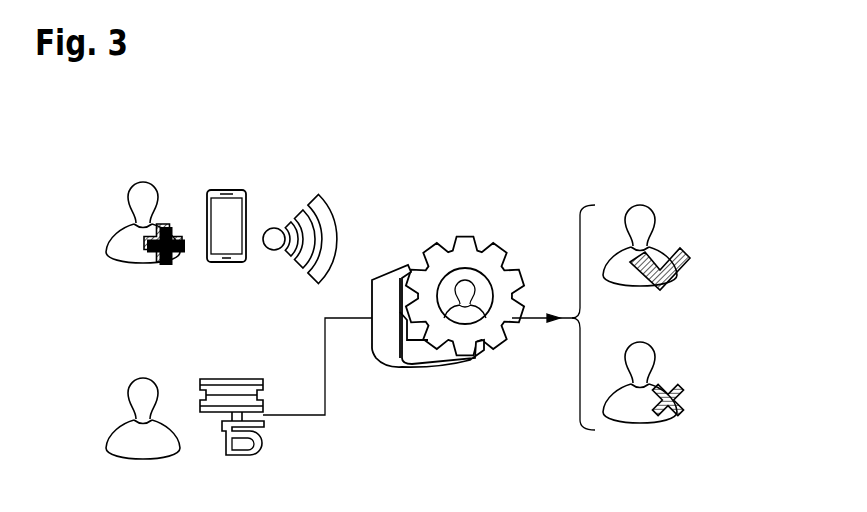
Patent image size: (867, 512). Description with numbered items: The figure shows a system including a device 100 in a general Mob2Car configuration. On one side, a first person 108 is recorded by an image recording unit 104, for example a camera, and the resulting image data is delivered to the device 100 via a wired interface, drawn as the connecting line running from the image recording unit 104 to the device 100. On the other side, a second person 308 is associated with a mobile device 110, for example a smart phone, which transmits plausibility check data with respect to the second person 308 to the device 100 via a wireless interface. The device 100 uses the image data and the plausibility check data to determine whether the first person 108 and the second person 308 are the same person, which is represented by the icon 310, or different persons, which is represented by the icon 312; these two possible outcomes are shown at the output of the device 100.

The device 100 is at (468, 237).
The image recording unit 104 is at (237, 380).
The first person 108 is at (137, 393).
The mobile device 110 is at (232, 198).
The second person 308 is at (137, 194).
The icon 310 is at (648, 216).
The icon 312 is at (648, 351).